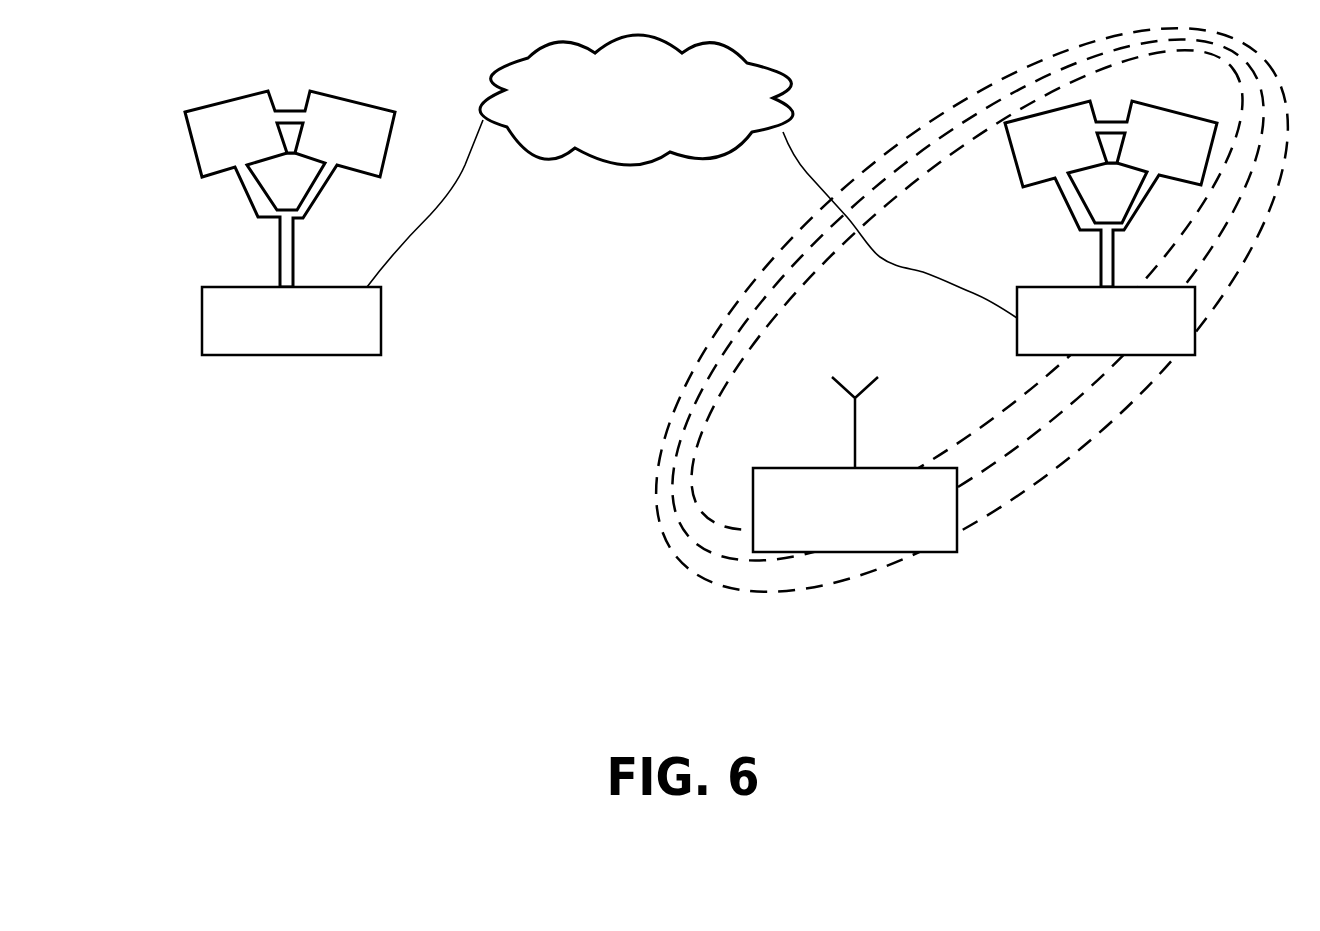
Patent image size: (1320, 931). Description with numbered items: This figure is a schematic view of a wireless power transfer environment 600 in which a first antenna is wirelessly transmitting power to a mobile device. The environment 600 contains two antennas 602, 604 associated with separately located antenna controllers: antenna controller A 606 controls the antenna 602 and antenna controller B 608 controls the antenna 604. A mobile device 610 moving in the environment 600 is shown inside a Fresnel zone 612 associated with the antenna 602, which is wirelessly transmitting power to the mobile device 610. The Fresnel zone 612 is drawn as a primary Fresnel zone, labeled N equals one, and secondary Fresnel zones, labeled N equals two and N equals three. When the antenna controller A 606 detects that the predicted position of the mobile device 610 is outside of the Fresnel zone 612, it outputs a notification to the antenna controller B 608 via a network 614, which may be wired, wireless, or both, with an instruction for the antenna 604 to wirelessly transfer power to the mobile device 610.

The wireless power transfer environment 600 is at (363, 575).
The antenna 602 is at (1160, 110).
The antenna 604 is at (380, 120).
The antenna controller A 606 is at (1198, 340).
The antenna controller B 608 is at (383, 319).
The mobile device 610 is at (957, 545).
The Fresnel zone 612 is at (750, 405).
The network 614 is at (782, 87).